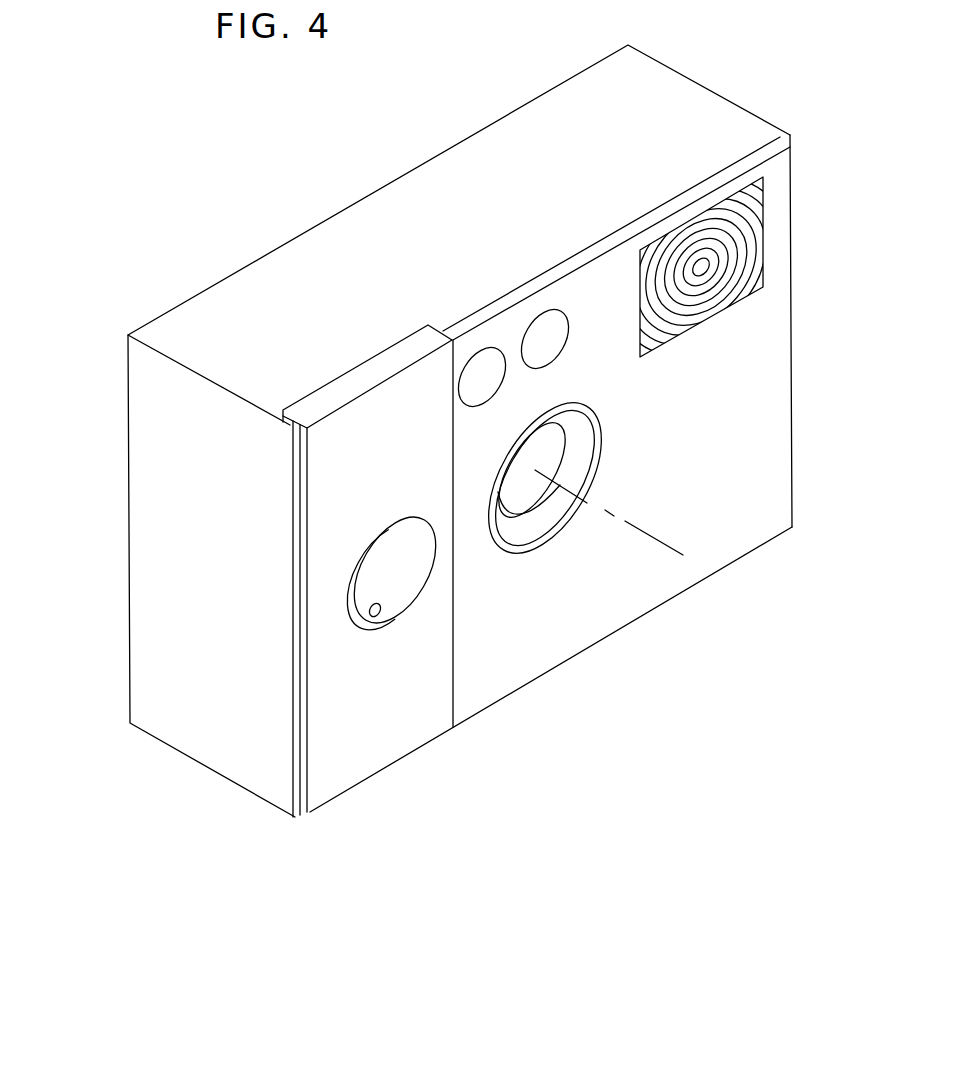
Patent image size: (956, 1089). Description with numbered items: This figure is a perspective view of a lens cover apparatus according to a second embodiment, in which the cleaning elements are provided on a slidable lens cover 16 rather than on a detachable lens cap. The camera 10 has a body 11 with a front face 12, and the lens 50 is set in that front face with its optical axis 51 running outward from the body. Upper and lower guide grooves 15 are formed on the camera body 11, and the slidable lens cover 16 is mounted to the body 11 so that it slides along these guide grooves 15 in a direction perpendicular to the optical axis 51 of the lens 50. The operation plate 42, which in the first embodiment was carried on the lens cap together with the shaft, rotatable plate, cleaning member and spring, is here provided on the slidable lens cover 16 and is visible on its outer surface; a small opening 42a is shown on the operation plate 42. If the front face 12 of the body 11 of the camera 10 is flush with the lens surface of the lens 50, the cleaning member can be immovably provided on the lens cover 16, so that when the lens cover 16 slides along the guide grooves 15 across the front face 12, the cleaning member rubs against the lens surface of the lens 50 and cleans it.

The camera 10 is at (204, 806).
The camera body 11 is at (165, 562).
The front face 12 is at (770, 447).
The guide grooves 15 is at (735, 160).
The slidable lens cover 16 is at (385, 737).
The operation plate 42 is at (410, 585).
The button hole 42a is at (380, 616).
The lens 50 is at (528, 498).
The optical axis 51 is at (652, 533).